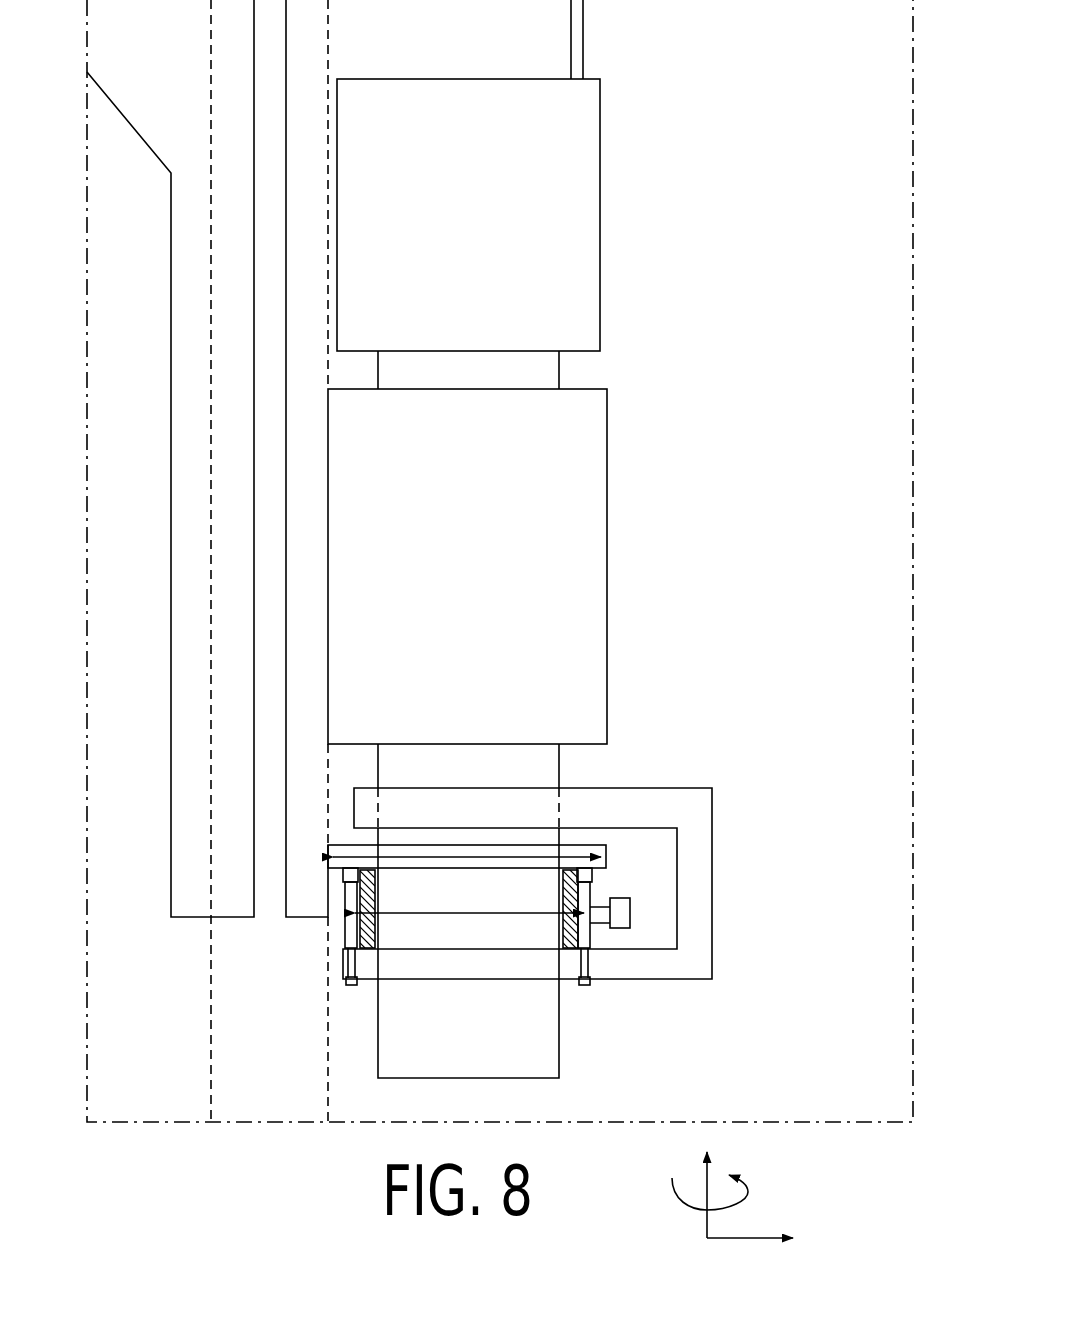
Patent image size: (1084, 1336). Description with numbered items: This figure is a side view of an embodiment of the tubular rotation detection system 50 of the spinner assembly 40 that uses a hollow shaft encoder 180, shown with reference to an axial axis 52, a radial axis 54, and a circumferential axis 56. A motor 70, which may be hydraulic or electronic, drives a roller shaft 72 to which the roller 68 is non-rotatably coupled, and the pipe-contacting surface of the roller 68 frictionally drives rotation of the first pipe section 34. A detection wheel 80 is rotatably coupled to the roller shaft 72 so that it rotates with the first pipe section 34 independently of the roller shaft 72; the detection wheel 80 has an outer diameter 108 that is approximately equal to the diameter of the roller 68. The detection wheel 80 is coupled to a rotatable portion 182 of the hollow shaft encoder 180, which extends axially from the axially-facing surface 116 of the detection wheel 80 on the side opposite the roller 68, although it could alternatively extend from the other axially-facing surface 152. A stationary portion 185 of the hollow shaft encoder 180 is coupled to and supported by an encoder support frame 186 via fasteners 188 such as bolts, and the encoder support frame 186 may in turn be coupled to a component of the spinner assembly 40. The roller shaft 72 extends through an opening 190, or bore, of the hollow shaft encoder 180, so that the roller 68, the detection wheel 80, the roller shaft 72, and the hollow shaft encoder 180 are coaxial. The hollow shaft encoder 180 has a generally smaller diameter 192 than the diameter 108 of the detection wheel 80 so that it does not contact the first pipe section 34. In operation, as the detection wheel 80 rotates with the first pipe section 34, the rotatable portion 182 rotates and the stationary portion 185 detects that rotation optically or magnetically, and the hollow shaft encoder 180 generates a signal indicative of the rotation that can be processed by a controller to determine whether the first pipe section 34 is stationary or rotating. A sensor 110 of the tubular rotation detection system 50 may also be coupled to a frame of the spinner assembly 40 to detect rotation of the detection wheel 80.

The first pipe section 34 is at (328, 930).
The spinner assembly 40 is at (648, 80).
The tubular rotation detection system 50 is at (634, 407).
The axial axis 52 is at (707, 1216).
The radial axis 54 is at (747, 1241).
The circumferential axis 56 is at (745, 1195).
The roller 68 is at (595, 592).
The motor 70 is at (588, 148).
The roller shaft 72 is at (552, 375).
The detection wheel 80 is at (350, 844).
The diameter 108 is at (468, 857).
The sensor 110 is at (650, 851).
The axially-facing surface 116 is at (517, 888).
The other axially-facing surface 152 is at (574, 843).
The hollow shaft encoder 180 is at (599, 897).
The rotatable portion 182 is at (590, 933).
The stationary portion 185 is at (587, 898).
The encoder support frame 186 is at (655, 968).
The fasteners 188 is at (583, 986).
The opening 190 is at (572, 994).
The diameter 192 is at (467, 914).